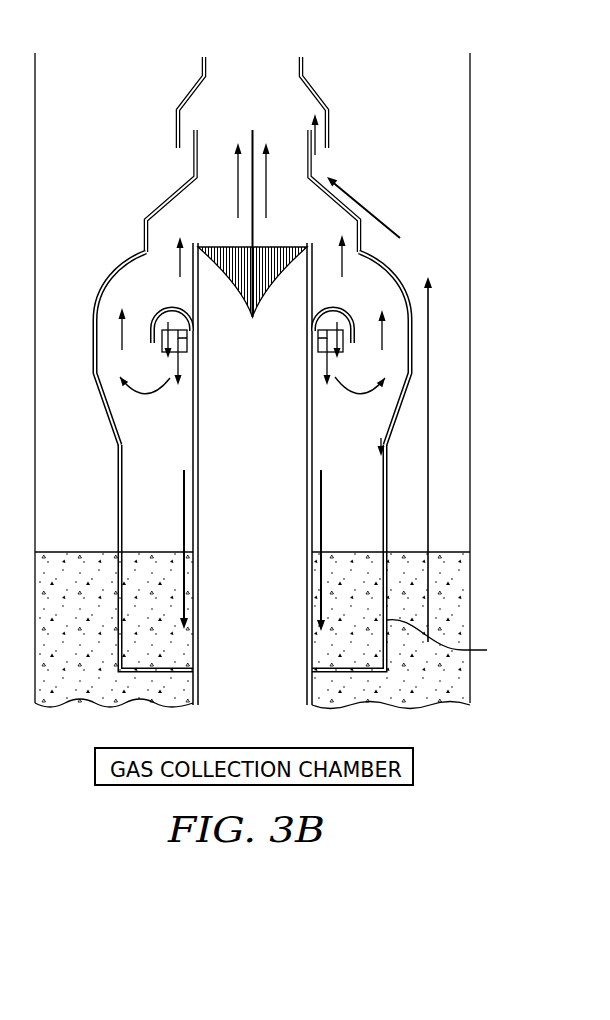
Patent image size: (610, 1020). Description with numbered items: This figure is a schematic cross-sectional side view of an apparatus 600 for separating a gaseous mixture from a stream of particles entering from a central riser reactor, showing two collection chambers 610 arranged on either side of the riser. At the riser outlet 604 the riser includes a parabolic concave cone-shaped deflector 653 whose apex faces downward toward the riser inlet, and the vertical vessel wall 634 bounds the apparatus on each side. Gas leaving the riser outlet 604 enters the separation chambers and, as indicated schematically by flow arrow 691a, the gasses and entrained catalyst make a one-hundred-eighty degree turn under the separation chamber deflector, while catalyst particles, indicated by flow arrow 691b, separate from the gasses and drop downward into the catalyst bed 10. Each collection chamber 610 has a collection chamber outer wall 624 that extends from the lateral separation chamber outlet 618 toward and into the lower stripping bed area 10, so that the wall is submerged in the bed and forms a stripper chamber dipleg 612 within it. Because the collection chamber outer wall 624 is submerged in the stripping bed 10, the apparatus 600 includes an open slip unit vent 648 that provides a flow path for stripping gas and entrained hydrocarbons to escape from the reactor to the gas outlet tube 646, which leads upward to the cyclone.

The apparatus 600 is at (500, 130).
The vessel wall 634 is at (438, 268).
The gas outlet tube 646 is at (312, 92).
The open slip unit vent 648 is at (328, 150).
The parabolic concave cone-shaped deflector 653 is at (226, 247).
The riser outlet 604 is at (312, 243).
The collection chamber outer wall 624 is at (410, 352).
The collection chamber 610 is at (389, 456).
The stripper chamber dipleg 612 is at (353, 475).
The flow arrow 691a is at (170, 318).
The lateral separation chamber outlet 618 is at (353, 337).
The flow arrow 691b is at (185, 517).
The catalyst bed 10 is at (67, 540).